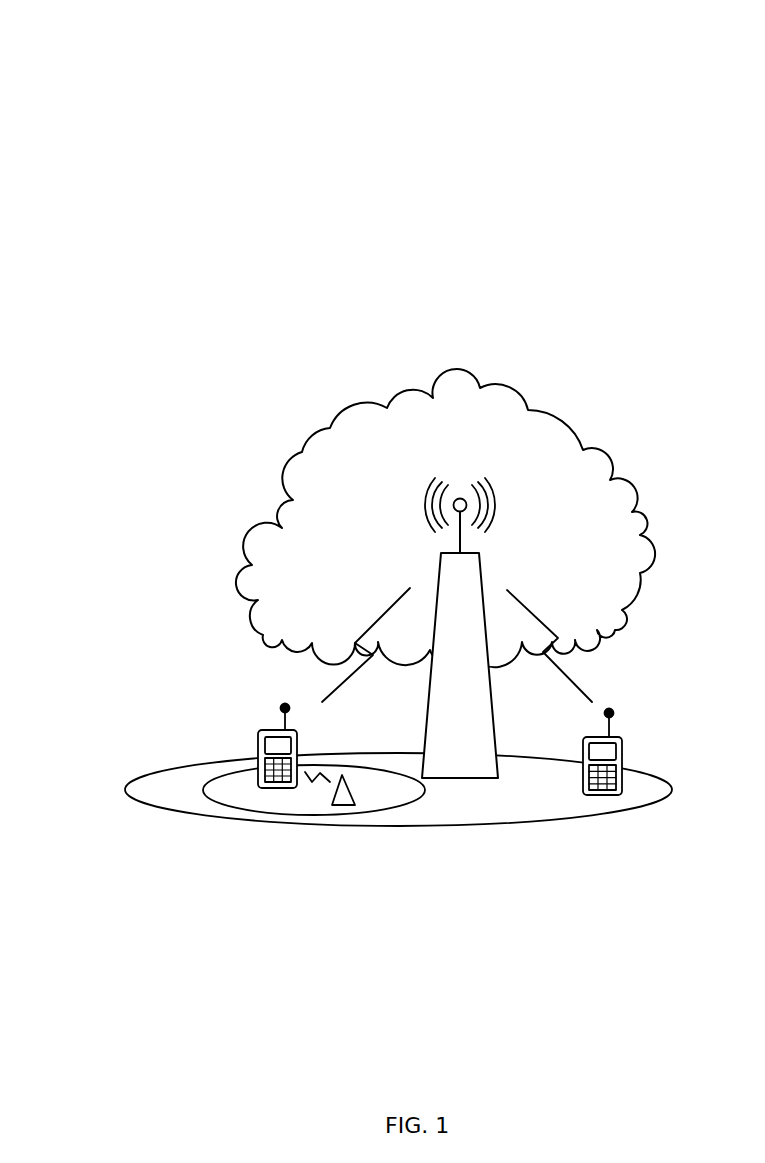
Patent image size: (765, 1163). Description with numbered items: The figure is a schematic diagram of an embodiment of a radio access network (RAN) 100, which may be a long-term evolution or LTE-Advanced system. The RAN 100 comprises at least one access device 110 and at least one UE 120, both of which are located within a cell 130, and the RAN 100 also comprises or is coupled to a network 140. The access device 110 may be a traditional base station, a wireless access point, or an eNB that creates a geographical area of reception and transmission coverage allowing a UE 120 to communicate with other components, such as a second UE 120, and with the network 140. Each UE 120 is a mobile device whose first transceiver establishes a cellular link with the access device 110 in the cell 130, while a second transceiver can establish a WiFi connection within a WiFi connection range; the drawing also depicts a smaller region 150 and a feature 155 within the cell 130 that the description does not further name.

The radio access network 100 is at (91, 84).
The access device 110 is at (480, 562).
The UE 120 is at (262, 730).
The cell 130 is at (357, 827).
The network 140 is at (522, 385).
The region of interest 150 is at (203, 789).
The geographic feature 155 is at (350, 790).